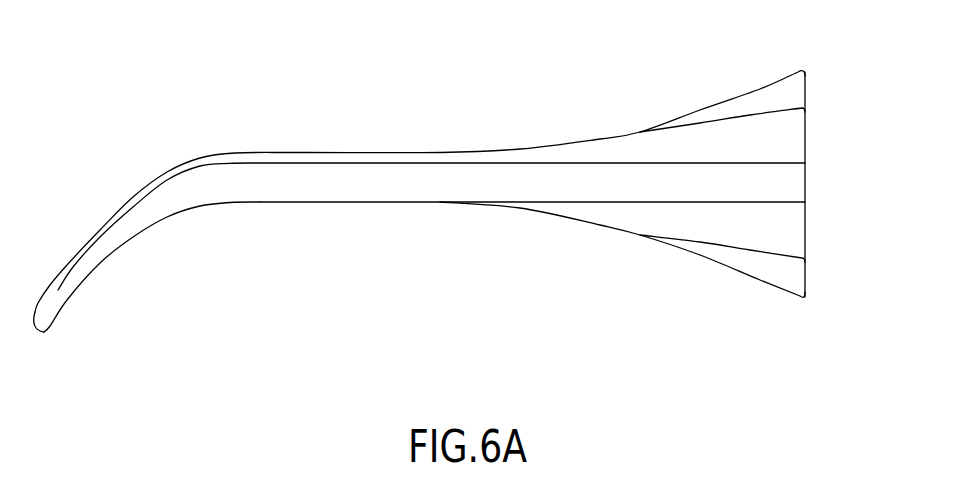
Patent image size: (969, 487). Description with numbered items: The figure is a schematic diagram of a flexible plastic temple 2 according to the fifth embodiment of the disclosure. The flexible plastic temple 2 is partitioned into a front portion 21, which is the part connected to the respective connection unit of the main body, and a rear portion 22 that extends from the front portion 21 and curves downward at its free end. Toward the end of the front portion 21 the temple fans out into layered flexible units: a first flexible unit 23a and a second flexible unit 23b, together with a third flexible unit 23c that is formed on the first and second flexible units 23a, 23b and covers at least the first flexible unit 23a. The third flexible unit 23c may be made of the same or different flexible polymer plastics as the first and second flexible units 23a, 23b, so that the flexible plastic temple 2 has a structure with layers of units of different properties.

The flexible plastic temple 2 is at (271, 128).
The front portion 21 is at (602, 185).
The rear portion 22 is at (355, 183).
The first flexible unit 23a is at (793, 138).
The second flexible unit 23b is at (793, 229).
The third flexible unit 23c is at (793, 93).